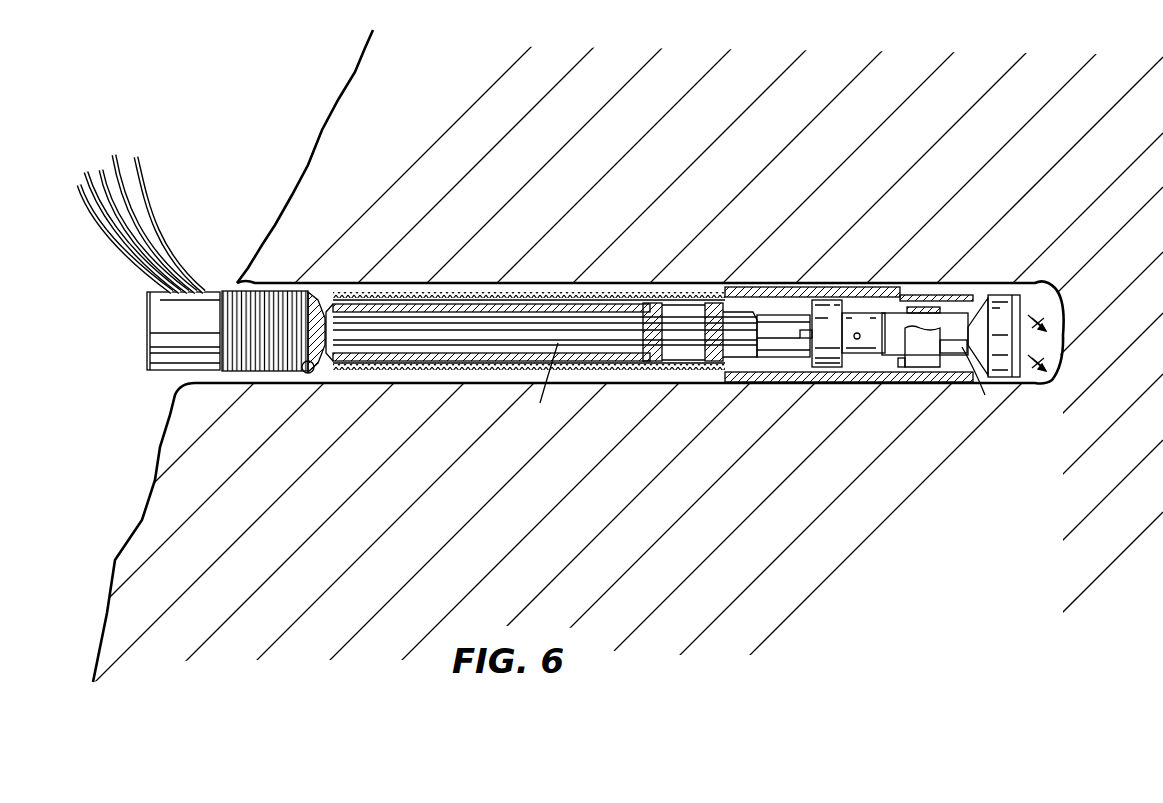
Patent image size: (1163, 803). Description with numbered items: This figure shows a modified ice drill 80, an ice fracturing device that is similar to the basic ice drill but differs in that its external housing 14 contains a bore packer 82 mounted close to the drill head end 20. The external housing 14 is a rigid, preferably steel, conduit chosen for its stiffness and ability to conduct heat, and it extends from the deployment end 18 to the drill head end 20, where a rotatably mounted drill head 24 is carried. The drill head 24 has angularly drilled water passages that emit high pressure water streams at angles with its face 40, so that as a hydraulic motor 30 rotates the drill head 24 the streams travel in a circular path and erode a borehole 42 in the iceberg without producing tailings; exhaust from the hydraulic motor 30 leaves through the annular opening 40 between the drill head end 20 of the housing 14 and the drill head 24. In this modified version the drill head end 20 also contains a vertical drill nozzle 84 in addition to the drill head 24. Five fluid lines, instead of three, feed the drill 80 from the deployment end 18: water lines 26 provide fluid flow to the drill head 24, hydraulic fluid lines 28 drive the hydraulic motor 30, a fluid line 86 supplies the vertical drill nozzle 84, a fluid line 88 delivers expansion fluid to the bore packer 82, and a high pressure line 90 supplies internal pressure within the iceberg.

The external housing 14 is at (437, 297).
The deployment end 18 is at (177, 347).
The drill head end 20 is at (893, 382).
The drill head 24 is at (1007, 345).
The water lines 26 is at (138, 175).
The hydraulic fluid lines 28 is at (115, 155).
The hydraulic motor 30 is at (953, 338).
The face / annular opening 40 is at (978, 298).
The borehole 42 is at (372, 290).
The modified ice drill 80 is at (590, 252).
The bore packer 82 is at (780, 285).
The vertical drill nozzle 84 is at (895, 287).
The fluid line 86 is at (100, 172).
The fluid line 88 is at (78, 175).
The high pressure line 90 is at (74, 196).